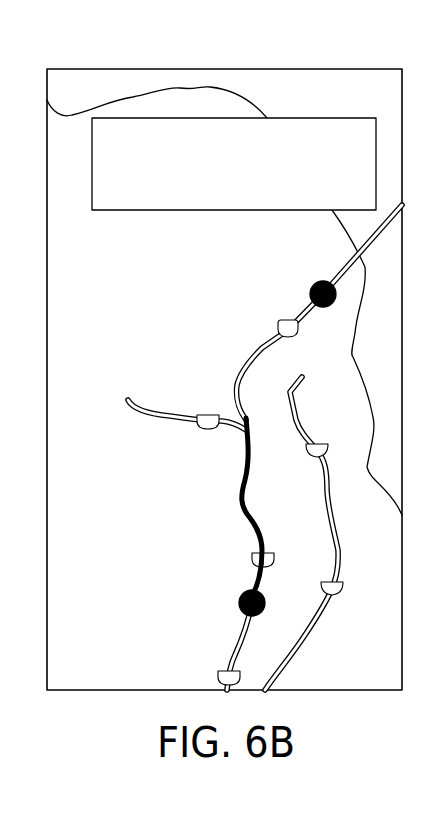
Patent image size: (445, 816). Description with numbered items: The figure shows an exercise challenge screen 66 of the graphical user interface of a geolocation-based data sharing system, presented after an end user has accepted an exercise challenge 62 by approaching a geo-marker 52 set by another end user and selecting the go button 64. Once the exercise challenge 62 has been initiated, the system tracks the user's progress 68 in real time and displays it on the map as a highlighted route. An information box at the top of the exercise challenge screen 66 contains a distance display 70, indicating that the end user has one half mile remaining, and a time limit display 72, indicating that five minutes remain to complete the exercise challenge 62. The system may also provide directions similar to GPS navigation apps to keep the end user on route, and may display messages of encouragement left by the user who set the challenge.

The geo-marker 52 is at (202, 447).
The exercise challenge 62 is at (338, 92).
The go button 64 is at (189, 164).
The exercise challenge screen 66 is at (90, 69).
The user's progress 68 is at (240, 493).
The distance display 70 is at (322, 135).
The time limit display 72 is at (317, 163).